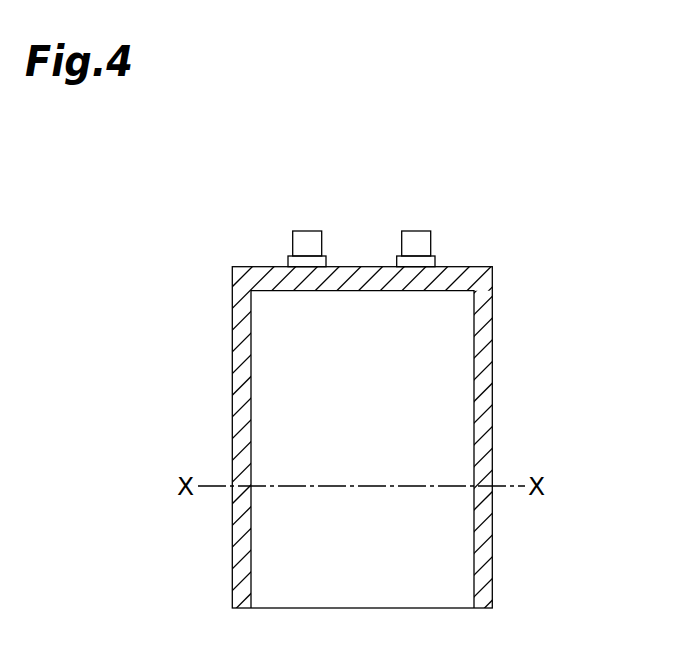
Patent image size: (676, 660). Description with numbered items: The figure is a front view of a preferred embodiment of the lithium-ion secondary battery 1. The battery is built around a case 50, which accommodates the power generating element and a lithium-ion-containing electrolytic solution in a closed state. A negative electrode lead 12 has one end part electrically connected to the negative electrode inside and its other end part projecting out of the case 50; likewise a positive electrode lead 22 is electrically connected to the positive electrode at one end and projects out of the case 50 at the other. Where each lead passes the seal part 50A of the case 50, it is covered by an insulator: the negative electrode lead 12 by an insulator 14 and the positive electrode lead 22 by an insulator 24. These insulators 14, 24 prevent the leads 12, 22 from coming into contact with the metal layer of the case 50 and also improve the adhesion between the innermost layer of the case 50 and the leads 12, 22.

The lithium-ion secondary battery 1 is at (485, 168).
The negative electrode lead 12 is at (308, 231).
The insulator 14 is at (288, 260).
The positive electrode lead 22 is at (417, 231).
The insulator 24 is at (397, 260).
The case 50 is at (492, 405).
The seal part 50A is at (480, 332).